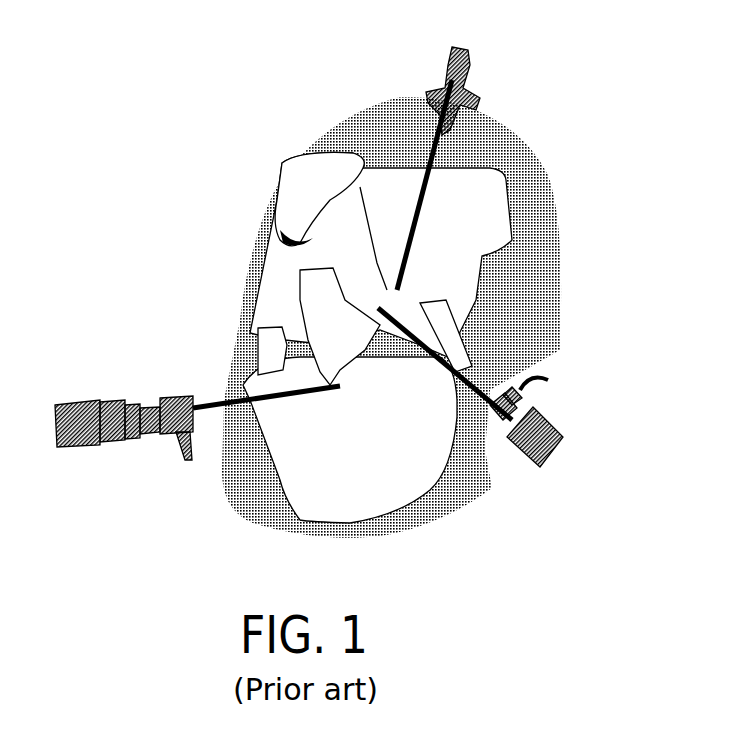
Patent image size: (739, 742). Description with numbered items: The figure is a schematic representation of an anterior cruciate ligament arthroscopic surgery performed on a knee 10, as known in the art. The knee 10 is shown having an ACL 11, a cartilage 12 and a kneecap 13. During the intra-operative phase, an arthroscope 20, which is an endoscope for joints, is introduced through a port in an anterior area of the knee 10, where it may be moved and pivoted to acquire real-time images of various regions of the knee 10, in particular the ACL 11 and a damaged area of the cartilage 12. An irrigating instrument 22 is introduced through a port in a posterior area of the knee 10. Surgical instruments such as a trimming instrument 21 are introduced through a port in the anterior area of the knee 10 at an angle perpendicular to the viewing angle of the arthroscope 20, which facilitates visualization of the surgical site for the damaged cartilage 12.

The knee 10 is at (247, 240).
The ACL 11 is at (455, 353).
The cartilage 12 is at (385, 332).
The kneecap 13 is at (303, 160).
The arthroscope 20 is at (68, 413).
The trimming instrument 21 is at (552, 430).
The irrigating instrument 22 is at (470, 58).